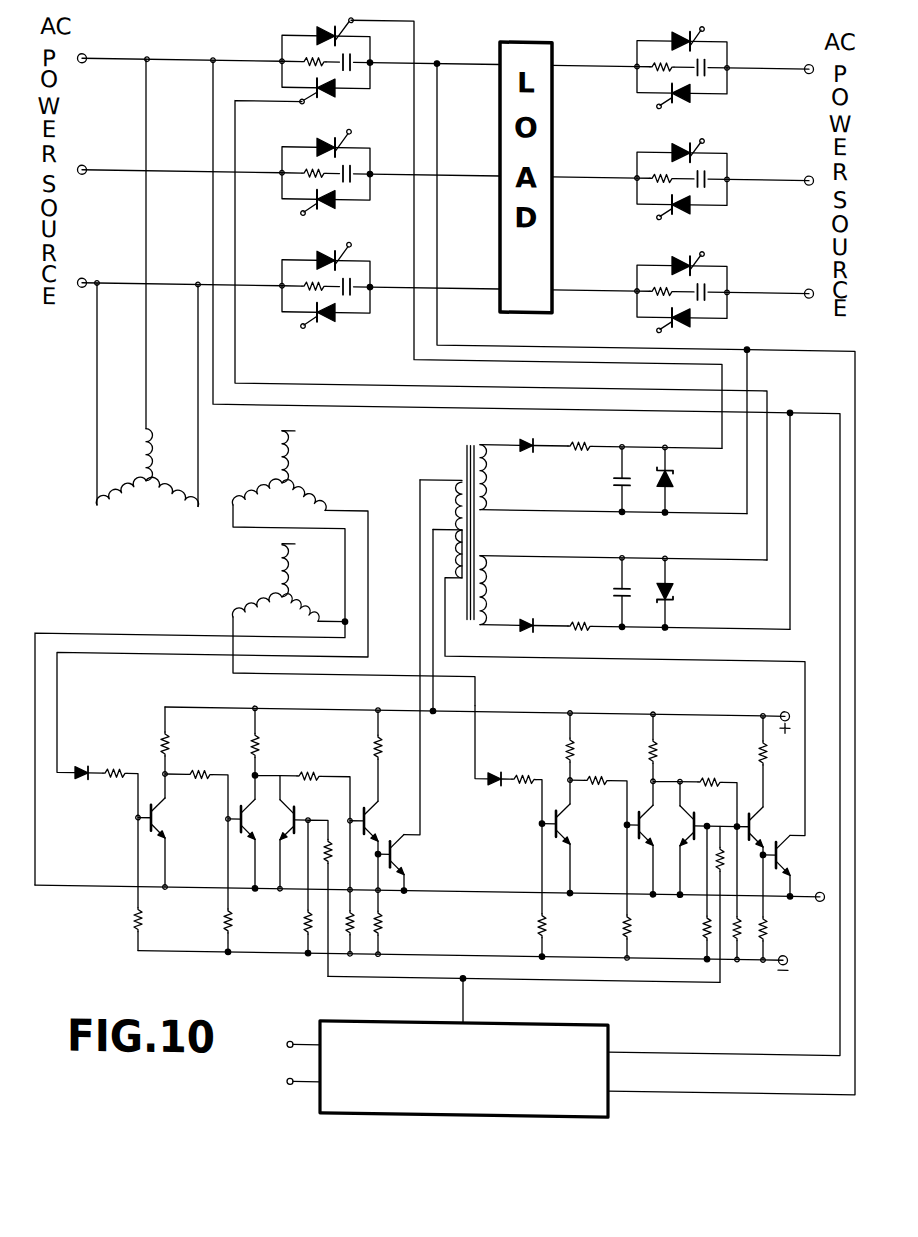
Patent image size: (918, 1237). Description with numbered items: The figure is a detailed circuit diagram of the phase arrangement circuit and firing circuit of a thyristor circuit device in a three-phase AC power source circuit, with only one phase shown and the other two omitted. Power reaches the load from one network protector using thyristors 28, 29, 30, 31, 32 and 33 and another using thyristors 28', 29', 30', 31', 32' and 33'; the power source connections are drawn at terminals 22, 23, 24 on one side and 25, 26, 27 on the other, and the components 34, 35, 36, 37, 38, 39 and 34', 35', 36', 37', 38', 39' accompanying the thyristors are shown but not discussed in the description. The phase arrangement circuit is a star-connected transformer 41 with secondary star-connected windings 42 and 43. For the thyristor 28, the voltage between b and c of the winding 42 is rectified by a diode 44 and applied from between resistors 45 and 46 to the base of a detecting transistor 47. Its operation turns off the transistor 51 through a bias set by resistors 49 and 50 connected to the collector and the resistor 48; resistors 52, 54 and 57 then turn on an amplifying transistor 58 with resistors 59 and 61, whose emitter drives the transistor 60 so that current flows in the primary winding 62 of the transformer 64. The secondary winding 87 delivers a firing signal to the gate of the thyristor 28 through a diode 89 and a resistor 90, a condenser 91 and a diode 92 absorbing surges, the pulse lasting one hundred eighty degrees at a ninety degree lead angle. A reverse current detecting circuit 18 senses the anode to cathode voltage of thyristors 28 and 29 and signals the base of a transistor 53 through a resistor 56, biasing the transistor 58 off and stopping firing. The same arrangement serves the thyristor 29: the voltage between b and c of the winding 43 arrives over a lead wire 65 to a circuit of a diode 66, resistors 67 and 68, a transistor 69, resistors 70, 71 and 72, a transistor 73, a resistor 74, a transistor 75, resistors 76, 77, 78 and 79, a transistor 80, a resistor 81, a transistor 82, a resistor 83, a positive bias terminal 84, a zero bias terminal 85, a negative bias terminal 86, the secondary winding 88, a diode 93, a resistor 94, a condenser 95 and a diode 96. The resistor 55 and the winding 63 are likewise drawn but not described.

The reverse current detecting circuit 18 is at (393, 1112).
The AC power source terminal 22 is at (95, 73).
The AC power source terminal 23 is at (95, 185).
The AC power source terminal 24 is at (95, 268).
The AC power source terminal 25 is at (795, 83).
The AC power source terminal 26 is at (797, 196).
The AC power source terminal 27 is at (797, 277).
The thyristor 28 is at (325, 23).
The thyristor 29 is at (333, 101).
The thyristor 30 is at (320, 137).
The thyristor 31 is at (334, 213).
The thyristor 32 is at (319, 249).
The thyristor 33 is at (330, 326).
The resistor 34 is at (289, 47).
The resistor 35 is at (289, 160).
The resistor 36 is at (289, 272).
The capacitor 37 is at (372, 47).
The capacitor 38 is at (373, 159).
The capacitor 39 is at (373, 272).
The thyristor 28' is at (673, 30).
The thyristor 29' is at (693, 105).
The thyristor 30' is at (675, 142).
The thyristor 31' is at (692, 217).
The thyristor 32' is at (676, 251).
The thyristor 33' is at (696, 325).
The resistor 34' is at (642, 52).
The resistor 35' is at (642, 163).
The resistor 36' is at (639, 276).
The capacitor 37' is at (734, 55).
The capacitor 38' is at (733, 167).
The capacitor 39' is at (733, 280).
The star-connected transformer 41 is at (143, 478).
The secondary star-connected winding 42 is at (288, 471).
The secondary star-connected winding 43 is at (272, 582).
The diode 44 is at (77, 757).
The resistor 45 is at (113, 757).
The resistor 46 is at (125, 920).
The transistor for detection 47 is at (162, 818).
The resistor 48 is at (180, 745).
The resistor 49 is at (199, 790).
The resistor 50 is at (216, 921).
The transistor 51 is at (241, 833).
The resistor 52 is at (243, 745).
The transistor 53 is at (286, 819).
The resistor 54 is at (309, 764).
The resistor 55 is at (296, 921).
The resistor 56 is at (320, 862).
The resistor 57 is at (341, 912).
The transistor for amplification 58 is at (364, 816).
The resistor 59 is at (393, 746).
The transistor 60 is at (405, 864).
The resistor 61 is at (392, 925).
The primary winding 62 is at (453, 506).
The primary winding 63 is at (449, 554).
The transformer 64 is at (467, 472).
The lead wire 65 is at (476, 757).
The diode 66 is at (497, 793).
The resistor 67 is at (524, 767).
The resistor 68 is at (530, 926).
The transistor 69 is at (568, 824).
The resistor 70 is at (584, 749).
The resistor 71 is at (597, 793).
The resistor 72 is at (614, 926).
The transistor 73 is at (641, 834).
The resistor 74 is at (667, 750).
The transistor 75 is at (700, 839).
The resistor 76 is at (709, 770).
The resistor 77 is at (697, 928).
The resistor 78 is at (724, 836).
The resistor 79 is at (738, 926).
The transistor 80 is at (751, 819).
The resistor 81 is at (752, 752).
The transistor 82 is at (790, 867).
The resistor 83 is at (779, 930).
The positive bias terminal 84 is at (789, 711).
The zero bias terminal 85 is at (820, 894).
The negative bias terminal 86 is at (797, 957).
The secondary winding 87 is at (497, 478).
The secondary winding 88 is at (497, 590).
The diode 89 is at (530, 433).
The resistor 90 is at (581, 434).
The condenser 91 is at (609, 479).
The diode 92 is at (679, 480).
The diode 93 is at (534, 614).
The resistor 94 is at (578, 638).
The condenser 95 is at (609, 592).
The diode 96 is at (679, 593).